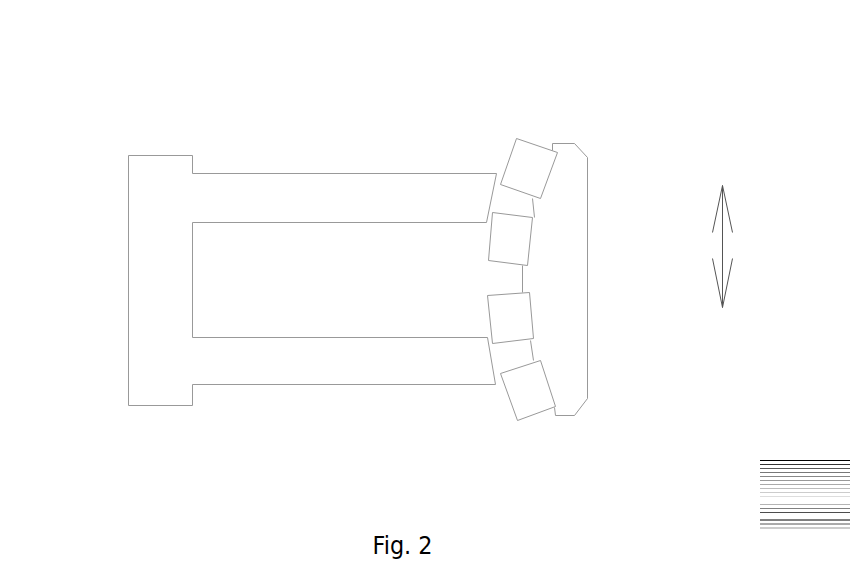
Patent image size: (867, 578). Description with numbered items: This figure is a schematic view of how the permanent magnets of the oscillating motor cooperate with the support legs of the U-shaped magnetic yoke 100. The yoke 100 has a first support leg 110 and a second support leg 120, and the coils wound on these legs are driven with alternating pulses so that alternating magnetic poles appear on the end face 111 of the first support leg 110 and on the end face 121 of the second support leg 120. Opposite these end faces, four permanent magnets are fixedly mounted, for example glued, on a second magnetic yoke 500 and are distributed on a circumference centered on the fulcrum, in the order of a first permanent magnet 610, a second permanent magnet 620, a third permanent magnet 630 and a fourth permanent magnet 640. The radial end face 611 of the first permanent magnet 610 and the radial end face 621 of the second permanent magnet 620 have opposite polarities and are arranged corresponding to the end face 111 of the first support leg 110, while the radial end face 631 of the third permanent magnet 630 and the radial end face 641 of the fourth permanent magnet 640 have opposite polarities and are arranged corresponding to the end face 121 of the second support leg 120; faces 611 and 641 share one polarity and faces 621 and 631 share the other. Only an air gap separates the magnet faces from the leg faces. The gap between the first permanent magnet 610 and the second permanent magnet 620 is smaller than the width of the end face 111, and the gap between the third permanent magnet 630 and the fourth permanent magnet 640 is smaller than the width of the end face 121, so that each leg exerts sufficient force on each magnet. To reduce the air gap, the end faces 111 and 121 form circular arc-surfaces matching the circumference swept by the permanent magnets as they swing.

The U-shaped magnetic yoke 100 is at (279, 274).
The first support leg 110 is at (345, 136).
The end face of the first support leg 111 is at (490, 193).
The second support leg 120 is at (344, 418).
The end face of the second support leg 121 is at (490, 357).
The second magnetic yoke 500 is at (563, 273).
The first permanent magnet 610 is at (521, 105).
The radial end face of the first permanent magnet 611 is at (508, 157).
The second permanent magnet 620 is at (484, 180).
The radial end face of the second permanent magnet 621 is at (487, 236).
The third permanent magnet 630 is at (515, 293).
The radial end face of the third permanent magnet 631 is at (488, 318).
The fourth permanent magnet 640 is at (564, 425).
The radial end face of the fourth permanent magnet 641 is at (508, 397).